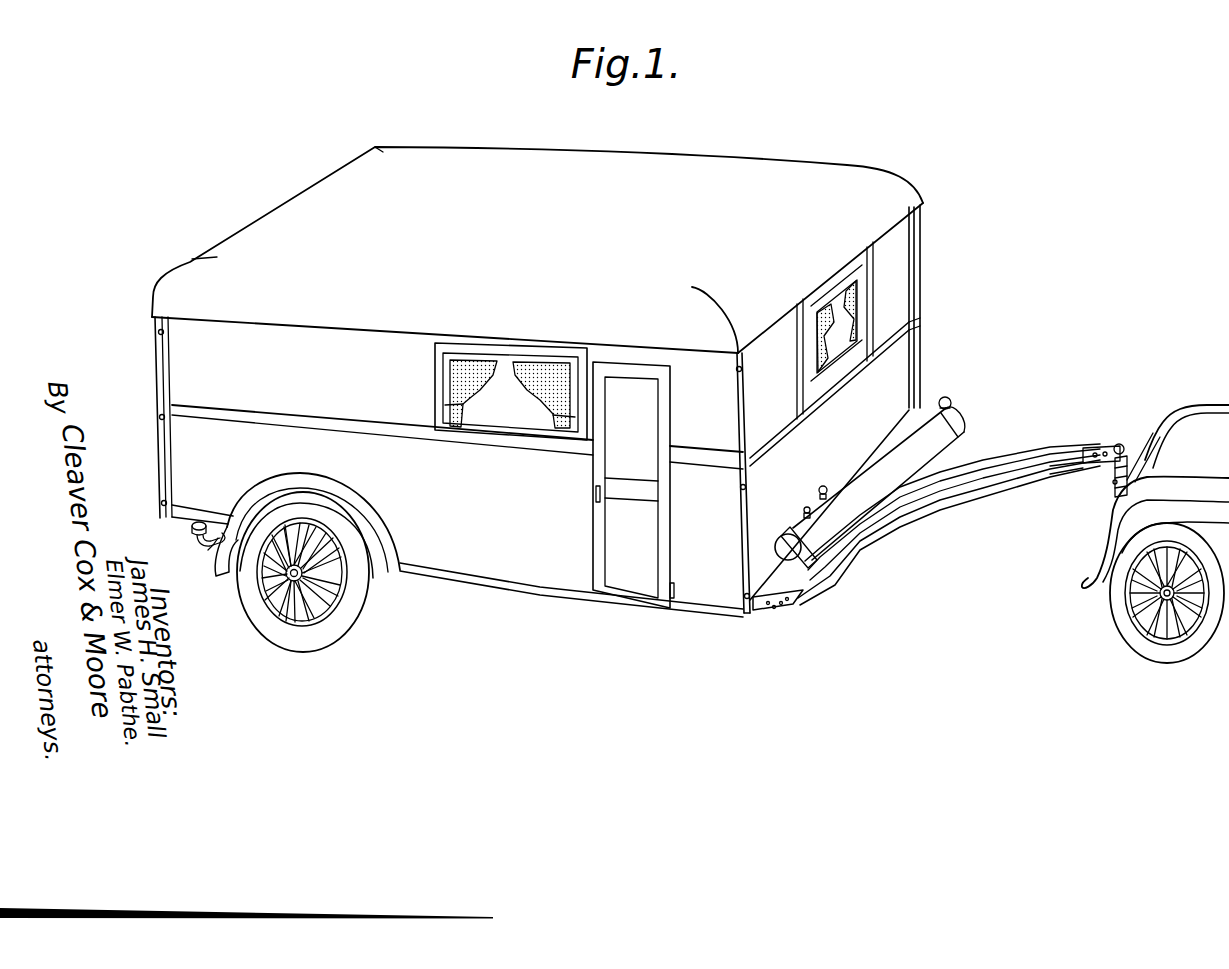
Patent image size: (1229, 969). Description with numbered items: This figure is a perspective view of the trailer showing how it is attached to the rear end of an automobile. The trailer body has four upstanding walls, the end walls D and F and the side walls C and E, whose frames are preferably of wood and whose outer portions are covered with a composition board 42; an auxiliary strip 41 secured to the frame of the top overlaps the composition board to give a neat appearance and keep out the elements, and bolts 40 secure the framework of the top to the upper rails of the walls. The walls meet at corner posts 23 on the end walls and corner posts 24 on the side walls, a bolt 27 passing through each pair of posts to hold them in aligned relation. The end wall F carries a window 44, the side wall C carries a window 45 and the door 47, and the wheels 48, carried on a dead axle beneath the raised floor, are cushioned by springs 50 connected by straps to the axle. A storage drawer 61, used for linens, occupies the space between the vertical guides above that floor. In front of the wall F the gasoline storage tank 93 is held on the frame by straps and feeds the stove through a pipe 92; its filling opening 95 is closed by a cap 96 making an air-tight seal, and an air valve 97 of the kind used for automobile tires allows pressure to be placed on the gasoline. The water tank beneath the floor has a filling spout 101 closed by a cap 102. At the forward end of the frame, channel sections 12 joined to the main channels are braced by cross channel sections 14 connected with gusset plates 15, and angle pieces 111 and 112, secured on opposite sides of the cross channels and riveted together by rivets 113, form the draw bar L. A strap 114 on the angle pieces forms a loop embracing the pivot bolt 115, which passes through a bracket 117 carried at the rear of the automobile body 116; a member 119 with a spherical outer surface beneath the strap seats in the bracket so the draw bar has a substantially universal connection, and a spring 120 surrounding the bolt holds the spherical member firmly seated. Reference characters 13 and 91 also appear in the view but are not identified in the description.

The channel sections 12 is at (806, 594).
The rivets 13 is at (781, 605).
The bracing cross channel sections 14 is at (858, 545).
The gusset plates 15 is at (836, 565).
The corner posts 23 is at (916, 326).
The corner posts 24 is at (162, 489).
The bolt 27 is at (158, 333).
The bolts 40 is at (473, 158).
The auxiliary strip 41 is at (335, 426).
The composition board 42 is at (829, 401).
The window 44 is at (813, 349).
The window 45 is at (510, 422).
The door 47 is at (633, 485).
The wheels 48 is at (291, 640).
The springs 50 is at (210, 551).
The storage drawer 61 is at (224, 577).
The coupling knob 91 is at (951, 412).
The pipe 92 is at (172, 455).
The gasoline storage tank 93 is at (880, 441).
The filling opening 95 is at (782, 550).
The cap 96 is at (826, 486).
The air valve 97 is at (805, 508).
The filling spout 101 is at (198, 541).
The cap 102 is at (191, 528).
The angle piece 111 is at (992, 448).
The angle piece 112 is at (1033, 452).
The rivets 113 is at (1076, 468).
The strap 114 is at (1113, 444).
The pivot bolt 115 is at (1122, 452).
The automobile body 116 is at (1172, 410).
The bracket 117 is at (1145, 432).
The spherical member 119 is at (1154, 465).
The spring 120 is at (1112, 484).
The side wall C is at (506, 590).
The end wall D is at (150, 392).
The side wall E is at (935, 263).
The end wall F is at (829, 421).
The draw bar L is at (971, 503).